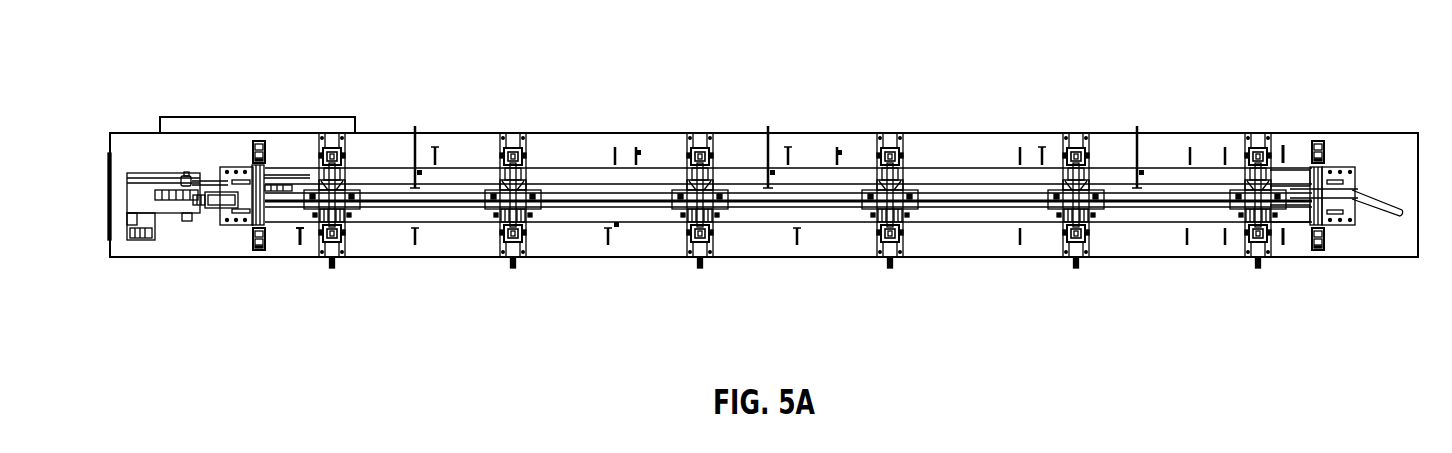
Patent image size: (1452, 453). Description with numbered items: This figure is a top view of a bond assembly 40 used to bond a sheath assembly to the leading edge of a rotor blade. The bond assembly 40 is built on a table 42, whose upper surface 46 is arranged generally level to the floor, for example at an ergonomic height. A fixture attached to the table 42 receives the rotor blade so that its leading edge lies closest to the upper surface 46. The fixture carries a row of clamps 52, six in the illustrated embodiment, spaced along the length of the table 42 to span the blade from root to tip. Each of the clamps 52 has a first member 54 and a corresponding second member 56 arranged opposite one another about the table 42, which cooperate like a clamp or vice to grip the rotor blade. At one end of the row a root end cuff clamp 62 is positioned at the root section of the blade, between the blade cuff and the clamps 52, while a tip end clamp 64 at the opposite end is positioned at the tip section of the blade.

The bond assembly 40 is at (139, 83).
The table 42 is at (1393, 133).
The upper surface 46 is at (1171, 146).
The clamps 52 is at (331, 284).
The first member 54 is at (1073, 259).
The second member 56 is at (348, 158).
The root end cuff clamp 62 is at (261, 261).
The tip end clamp 64 is at (1324, 126).